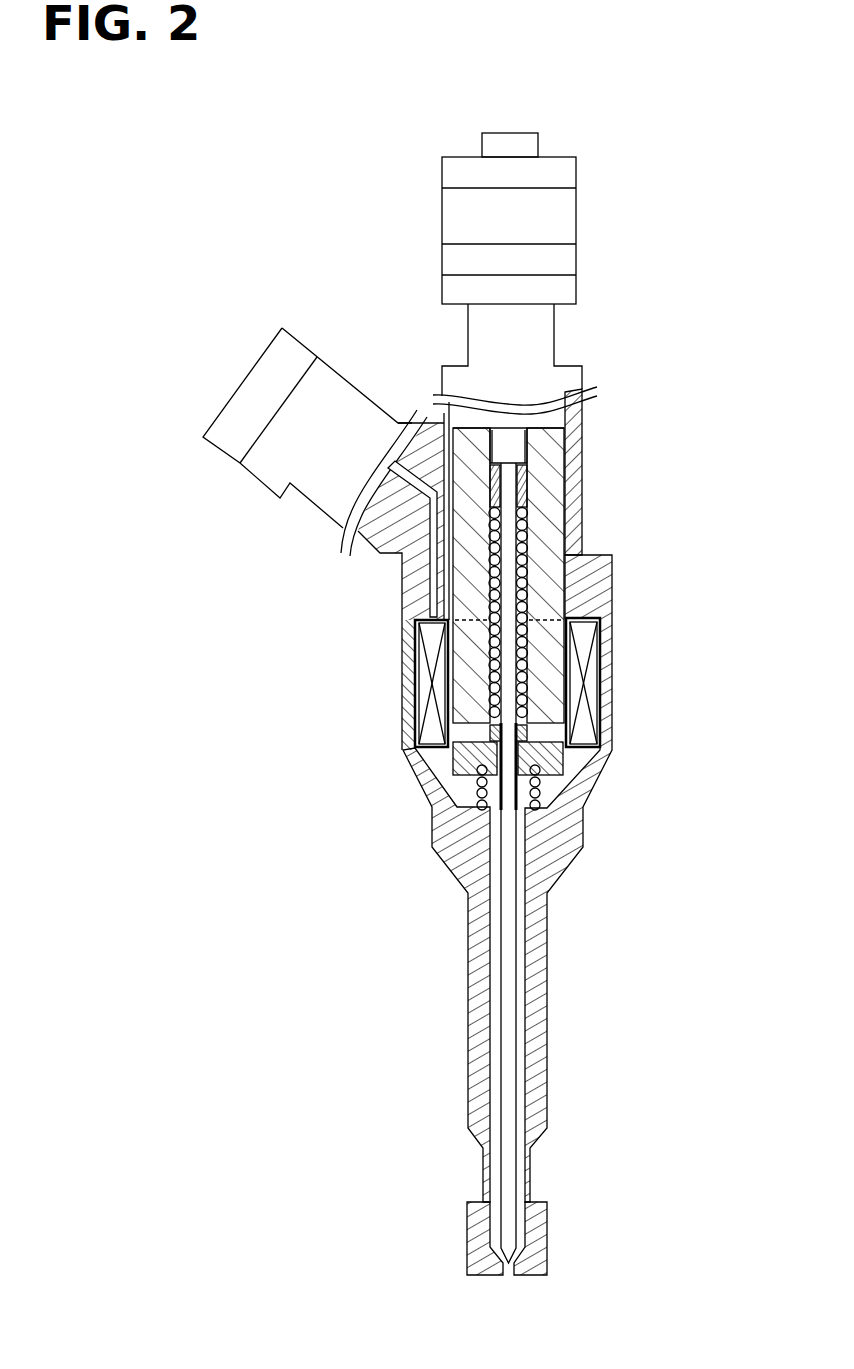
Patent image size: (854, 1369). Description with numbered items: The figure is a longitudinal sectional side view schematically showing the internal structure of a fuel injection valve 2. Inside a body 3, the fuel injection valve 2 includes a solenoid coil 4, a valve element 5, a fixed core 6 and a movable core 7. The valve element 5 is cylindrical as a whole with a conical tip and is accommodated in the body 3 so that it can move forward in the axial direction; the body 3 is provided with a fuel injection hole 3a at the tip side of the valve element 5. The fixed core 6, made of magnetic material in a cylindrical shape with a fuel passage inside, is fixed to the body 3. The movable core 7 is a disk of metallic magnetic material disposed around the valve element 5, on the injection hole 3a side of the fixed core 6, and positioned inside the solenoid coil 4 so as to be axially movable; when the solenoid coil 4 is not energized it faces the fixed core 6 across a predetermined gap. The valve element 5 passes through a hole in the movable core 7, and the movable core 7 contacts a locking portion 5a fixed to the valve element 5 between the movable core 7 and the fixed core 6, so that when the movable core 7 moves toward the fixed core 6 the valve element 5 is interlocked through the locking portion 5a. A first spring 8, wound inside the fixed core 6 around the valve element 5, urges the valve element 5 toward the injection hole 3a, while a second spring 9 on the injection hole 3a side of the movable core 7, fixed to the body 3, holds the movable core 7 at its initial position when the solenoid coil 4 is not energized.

The fuel injection valve 2 is at (655, 487).
The body 3 is at (598, 587).
The fuel injection hole 3a is at (508, 1277).
The solenoid coil 4 is at (588, 682).
The valve element 5 is at (510, 982).
The locking portion 5a is at (560, 762).
The fixed core 6 is at (553, 505).
The movable core 7 is at (525, 732).
The first spring 8 is at (523, 688).
The second spring 9 is at (537, 793).